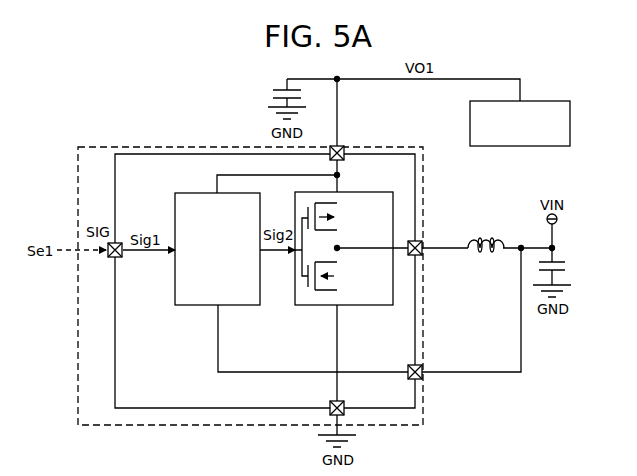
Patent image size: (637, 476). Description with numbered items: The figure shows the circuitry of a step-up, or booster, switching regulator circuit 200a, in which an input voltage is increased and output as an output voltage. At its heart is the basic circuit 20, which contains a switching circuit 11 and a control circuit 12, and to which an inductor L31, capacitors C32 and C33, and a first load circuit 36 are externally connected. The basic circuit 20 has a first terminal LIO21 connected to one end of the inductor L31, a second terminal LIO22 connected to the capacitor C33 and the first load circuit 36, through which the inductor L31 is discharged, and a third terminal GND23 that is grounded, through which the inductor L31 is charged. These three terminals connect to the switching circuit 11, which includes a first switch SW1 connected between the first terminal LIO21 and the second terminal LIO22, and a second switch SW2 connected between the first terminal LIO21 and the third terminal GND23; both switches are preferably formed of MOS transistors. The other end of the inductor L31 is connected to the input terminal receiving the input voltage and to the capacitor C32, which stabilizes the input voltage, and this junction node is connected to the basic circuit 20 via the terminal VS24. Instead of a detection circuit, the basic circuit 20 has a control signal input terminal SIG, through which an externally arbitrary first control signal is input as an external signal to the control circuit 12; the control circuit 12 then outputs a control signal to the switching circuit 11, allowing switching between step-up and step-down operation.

The step-up switching regulator circuit 200a is at (102, 110).
The basic circuit 20 is at (160, 146).
The first load circuit 36 is at (545, 101).
The control circuit 12 is at (237, 306).
The switching circuit 11 is at (346, 265).
The first switch SW1 is at (343, 215).
The second switch SW2 is at (343, 276).
The second terminal LIO22 is at (346, 142).
The first terminal LIO21 is at (424, 240).
The terminal VS24 is at (425, 363).
The third terminal GND23 is at (347, 415).
The control signal input terminal SIG is at (115, 250).
The capacitor C33 is at (268, 95).
The capacitor C32 is at (568, 265).
The inductor L31 is at (478, 254).